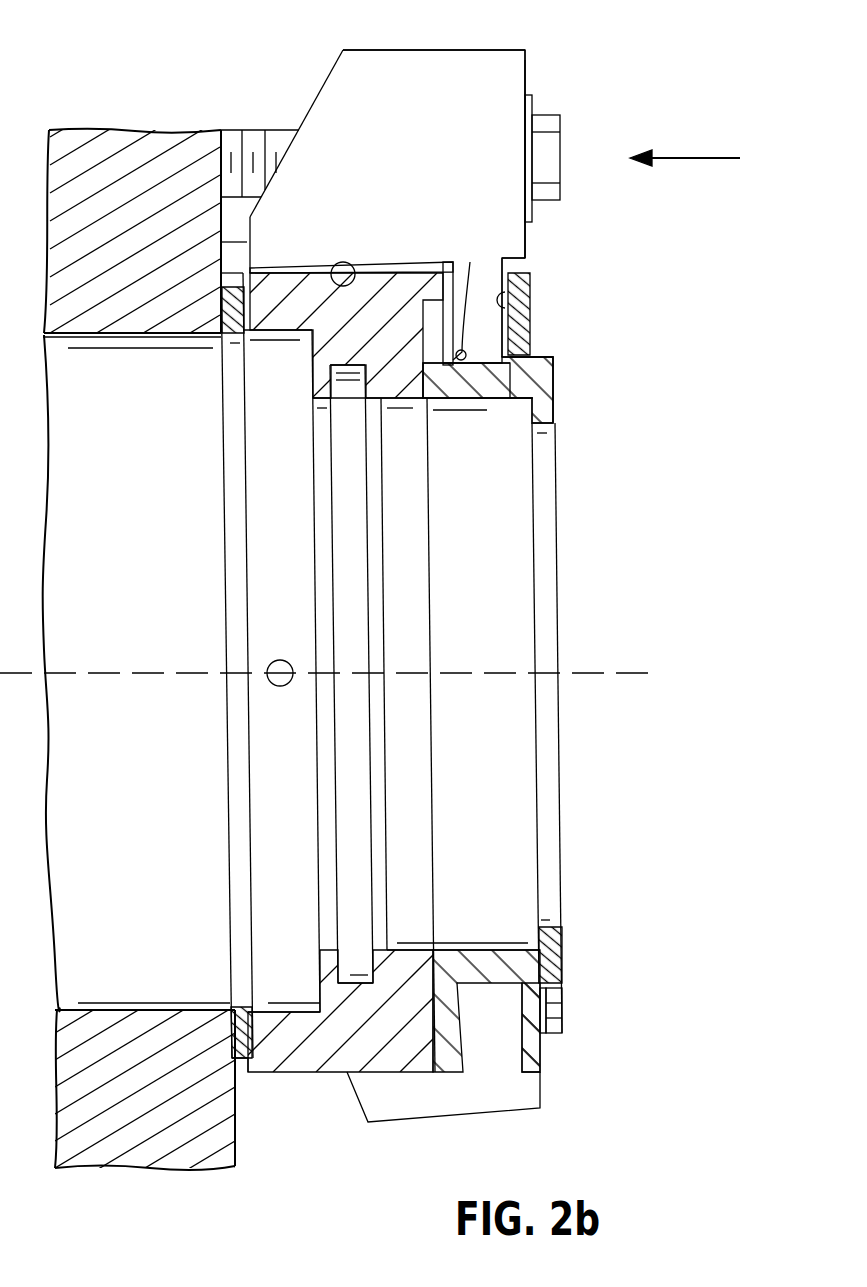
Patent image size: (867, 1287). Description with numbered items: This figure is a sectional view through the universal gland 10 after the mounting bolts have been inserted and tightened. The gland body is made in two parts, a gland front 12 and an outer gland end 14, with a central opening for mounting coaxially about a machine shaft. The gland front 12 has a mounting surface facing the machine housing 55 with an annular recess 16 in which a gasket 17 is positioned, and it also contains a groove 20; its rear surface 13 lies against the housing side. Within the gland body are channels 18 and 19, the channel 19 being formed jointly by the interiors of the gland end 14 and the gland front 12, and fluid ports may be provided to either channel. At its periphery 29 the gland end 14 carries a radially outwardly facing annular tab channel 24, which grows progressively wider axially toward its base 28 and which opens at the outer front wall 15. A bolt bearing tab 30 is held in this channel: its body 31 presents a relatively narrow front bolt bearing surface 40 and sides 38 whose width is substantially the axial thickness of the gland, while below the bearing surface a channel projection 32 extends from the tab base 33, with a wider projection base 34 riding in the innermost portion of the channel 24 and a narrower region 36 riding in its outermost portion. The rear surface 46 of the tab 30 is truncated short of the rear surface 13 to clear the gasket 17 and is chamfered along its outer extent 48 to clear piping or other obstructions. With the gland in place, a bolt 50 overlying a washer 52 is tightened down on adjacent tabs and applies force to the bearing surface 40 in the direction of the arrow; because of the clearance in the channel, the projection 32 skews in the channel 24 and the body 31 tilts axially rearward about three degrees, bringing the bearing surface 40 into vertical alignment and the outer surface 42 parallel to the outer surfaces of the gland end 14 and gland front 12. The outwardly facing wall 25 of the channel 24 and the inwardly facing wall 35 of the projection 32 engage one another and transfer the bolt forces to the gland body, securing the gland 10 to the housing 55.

The universal gland 10 is at (686, 94).
The gland front 12 is at (303, 1077).
The rear surface of gland front 13 is at (225, 275).
The outer gland end 14 is at (563, 958).
The outer front wall 15 is at (553, 385).
The annular recess 16 is at (222, 328).
The gasket 17 is at (225, 298).
The channel 18 is at (280, 928).
The channel 19 is at (405, 855).
The groove 20 is at (350, 763).
The tab channel 24 is at (510, 305).
The outwardly facing wall of channel 25 is at (423, 338).
The channel base 28 is at (472, 388).
The periphery 29 is at (443, 262).
The bolt bearing tab 30 is at (549, 70).
The tab body 31 is at (528, 60).
The channel projection 32 is at (480, 318).
The tab base 33 is at (335, 262).
The projection base 34 is at (500, 365).
The inwardly facing wall of projection 35 is at (470, 262).
The narrower region 36 is at (513, 278).
The tab sides 38 is at (497, 101).
The front bolt bearing surface 40 is at (527, 240).
The outer surface of tab 42 is at (453, 50).
The rear surface of tab 46 is at (247, 243).
The chamfered outer extent 48 is at (302, 125).
The bolt 50 is at (560, 122).
The washer 52 is at (532, 102).
The machine housing 55 is at (92, 142).